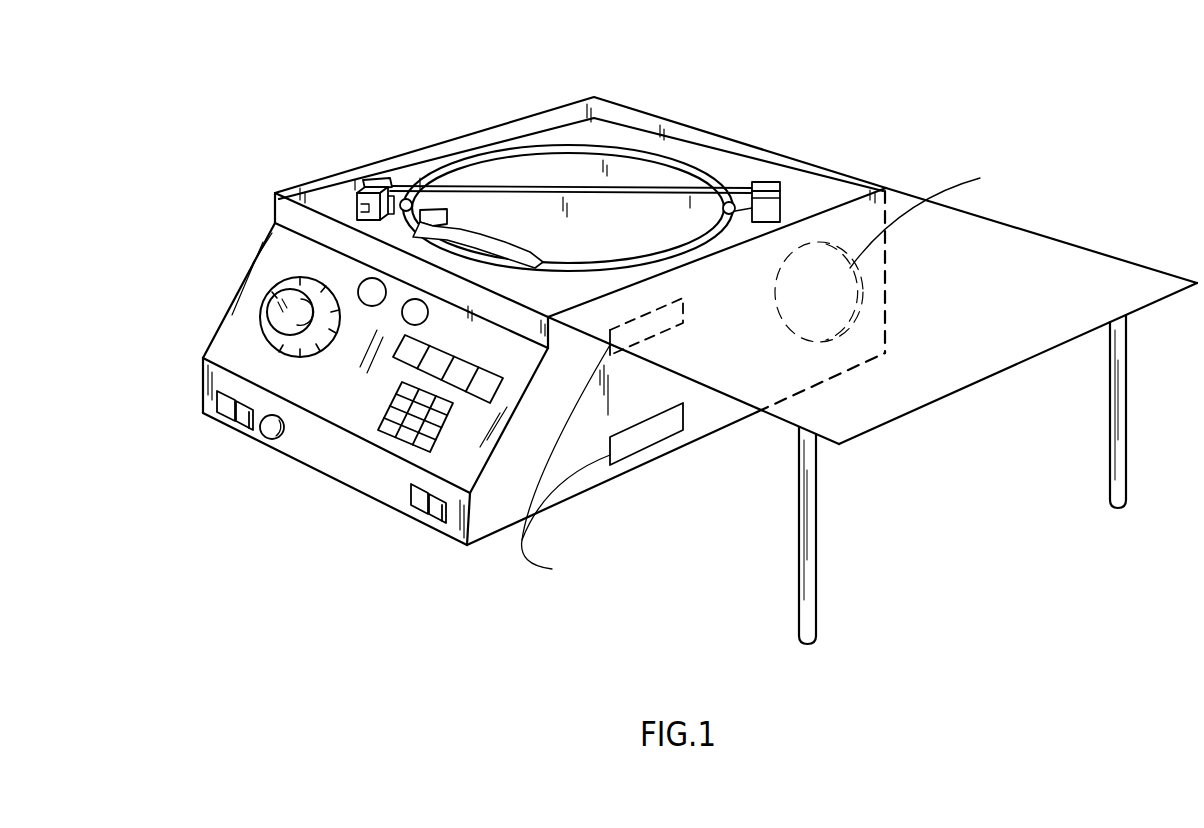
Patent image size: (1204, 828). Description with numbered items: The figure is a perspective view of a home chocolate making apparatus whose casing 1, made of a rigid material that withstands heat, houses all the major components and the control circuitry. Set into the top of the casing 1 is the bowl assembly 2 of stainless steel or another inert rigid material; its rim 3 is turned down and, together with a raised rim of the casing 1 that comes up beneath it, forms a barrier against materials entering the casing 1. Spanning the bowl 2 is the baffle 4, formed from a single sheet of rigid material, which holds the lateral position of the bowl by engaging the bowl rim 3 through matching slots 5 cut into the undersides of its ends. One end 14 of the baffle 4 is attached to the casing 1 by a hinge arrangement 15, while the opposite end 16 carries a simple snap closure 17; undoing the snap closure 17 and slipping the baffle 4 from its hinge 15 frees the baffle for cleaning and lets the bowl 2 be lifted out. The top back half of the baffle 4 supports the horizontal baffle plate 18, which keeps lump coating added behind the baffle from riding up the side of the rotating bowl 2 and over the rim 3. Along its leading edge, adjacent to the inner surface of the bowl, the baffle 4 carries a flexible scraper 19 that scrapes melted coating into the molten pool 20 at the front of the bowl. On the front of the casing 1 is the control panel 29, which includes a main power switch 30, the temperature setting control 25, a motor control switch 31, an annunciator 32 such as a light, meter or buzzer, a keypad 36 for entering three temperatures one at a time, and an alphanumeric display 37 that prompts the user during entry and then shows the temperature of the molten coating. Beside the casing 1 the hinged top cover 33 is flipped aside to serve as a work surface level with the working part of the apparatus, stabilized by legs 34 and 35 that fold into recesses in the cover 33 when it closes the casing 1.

The casing 1 is at (717, 425).
The bowl assembly 2 is at (516, 168).
The rim 3 is at (549, 148).
The baffle 4 is at (688, 203).
The slots 5 is at (409, 202).
The end 14 is at (398, 196).
The hinge arrangement 15 is at (375, 180).
The opposite end 16 is at (758, 182).
The snap closure 17 is at (779, 189).
The horizontal baffle plate 18 is at (657, 180).
The flexible scraper 19 is at (438, 214).
The molten pool 20 is at (380, 241).
The temperature setting control 25 is at (259, 308).
The control panel 29 is at (267, 270).
The main power switch 30 is at (222, 401).
The motor control switch 31 is at (420, 508).
The annunciator 32 is at (275, 442).
The top cover 33 is at (918, 400).
The leg 34 is at (815, 495).
The leg 35 is at (1125, 452).
The keypad 36 is at (412, 443).
The alphanumeric display 37 is at (397, 356).